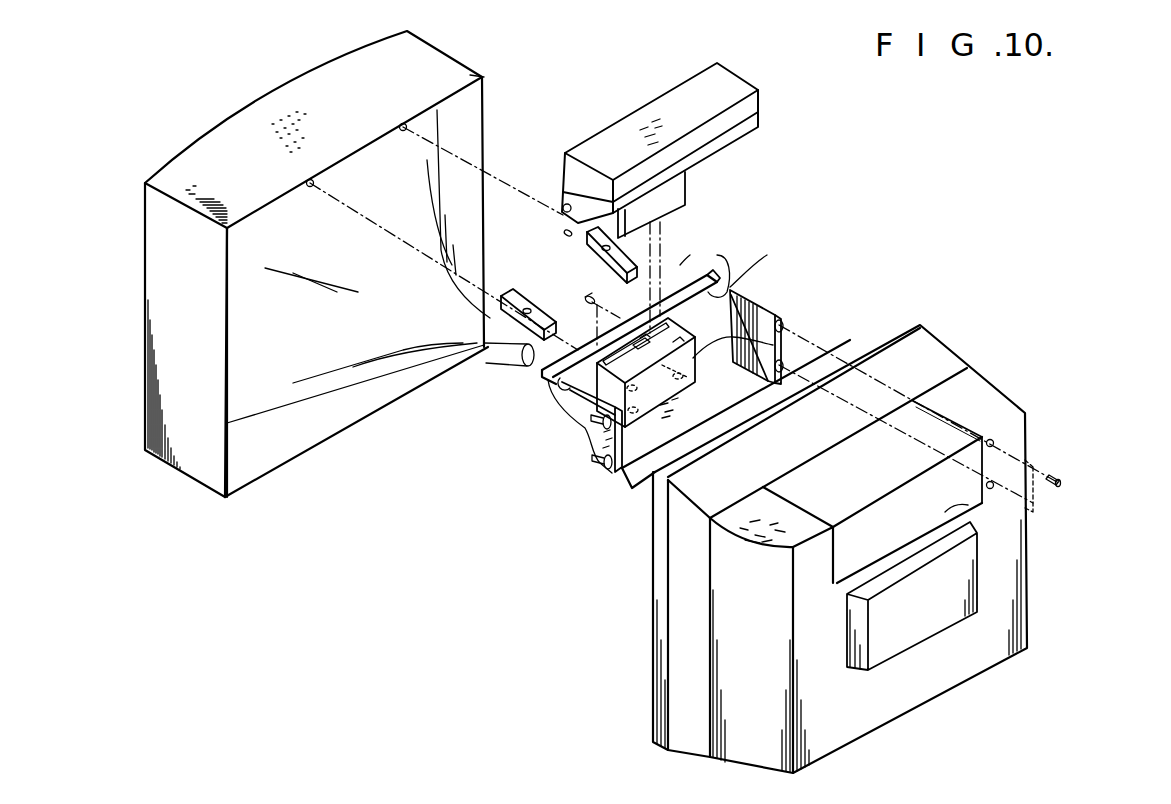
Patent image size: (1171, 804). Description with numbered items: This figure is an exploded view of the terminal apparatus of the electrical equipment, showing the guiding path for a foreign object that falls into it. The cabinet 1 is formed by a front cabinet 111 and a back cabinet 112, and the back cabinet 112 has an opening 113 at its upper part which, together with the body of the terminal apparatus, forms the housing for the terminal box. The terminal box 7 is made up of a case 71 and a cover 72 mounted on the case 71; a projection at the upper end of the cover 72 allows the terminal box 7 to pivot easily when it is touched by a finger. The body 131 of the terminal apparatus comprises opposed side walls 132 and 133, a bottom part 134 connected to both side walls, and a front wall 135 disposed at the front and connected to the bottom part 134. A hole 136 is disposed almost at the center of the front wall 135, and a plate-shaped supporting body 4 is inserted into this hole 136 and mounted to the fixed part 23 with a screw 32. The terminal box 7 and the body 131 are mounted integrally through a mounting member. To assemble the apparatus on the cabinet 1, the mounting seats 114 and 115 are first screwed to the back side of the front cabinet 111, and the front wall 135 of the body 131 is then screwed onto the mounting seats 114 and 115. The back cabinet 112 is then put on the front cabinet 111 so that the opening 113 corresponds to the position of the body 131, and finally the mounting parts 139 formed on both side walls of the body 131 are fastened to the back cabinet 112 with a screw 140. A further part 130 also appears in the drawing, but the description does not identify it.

The cabinet 1 is at (482, 77).
The terminal box 7 is at (701, 128).
The cover 72 is at (758, 98).
The case 71 is at (758, 127).
The plate-shaped supporting body 4 is at (687, 190).
The mounting seat 114 is at (505, 277).
The mounting seat 115 is at (598, 265).
The screw 32 is at (587, 298).
The frame 130 is at (733, 297).
The body 131 is at (707, 277).
The front wall 135 is at (708, 340).
The side wall 132 is at (592, 433).
The hole 136 is at (642, 360).
The bottom part 134 is at (635, 437).
The side wall 133 is at (763, 300).
The mounting parts 139 is at (603, 415).
The fixed part 23 is at (773, 345).
The back cabinet 112 is at (863, 738).
The opening 113 is at (985, 508).
The screw 140 is at (1062, 482).
The front cabinet 111 is at (192, 478).